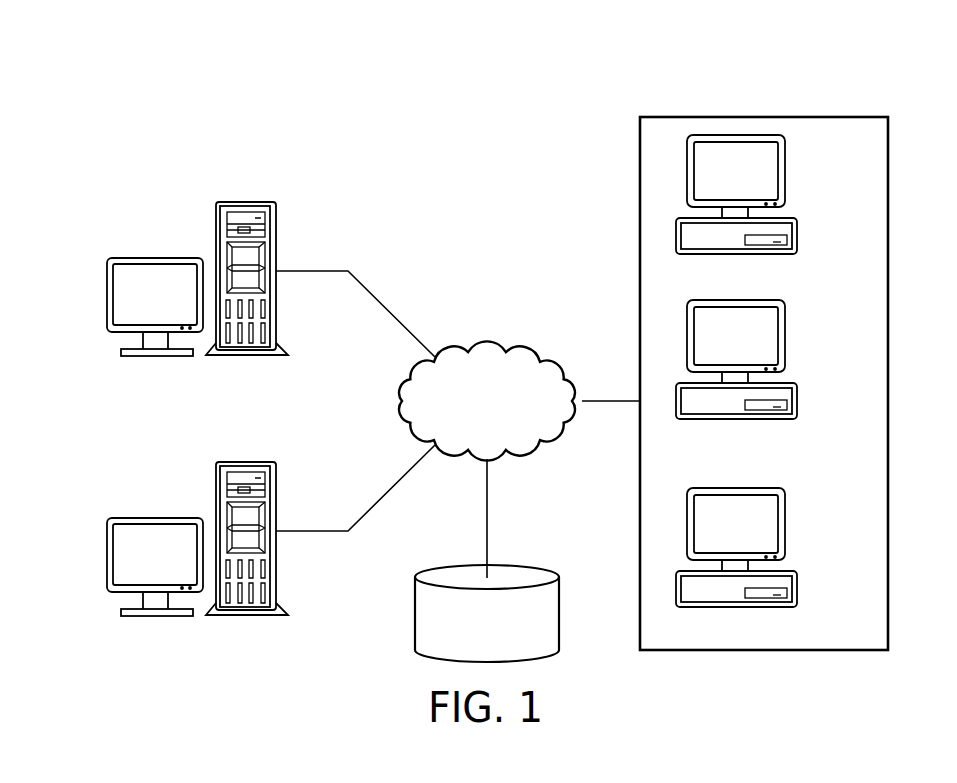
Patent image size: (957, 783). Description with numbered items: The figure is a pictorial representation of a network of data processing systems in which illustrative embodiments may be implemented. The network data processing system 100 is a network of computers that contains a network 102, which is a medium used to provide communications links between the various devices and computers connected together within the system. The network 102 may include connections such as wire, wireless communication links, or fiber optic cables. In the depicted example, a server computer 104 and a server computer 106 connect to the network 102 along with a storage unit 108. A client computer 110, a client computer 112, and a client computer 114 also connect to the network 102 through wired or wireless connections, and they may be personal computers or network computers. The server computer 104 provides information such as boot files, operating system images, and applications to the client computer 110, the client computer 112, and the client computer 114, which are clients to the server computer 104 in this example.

The network data processing system 100 is at (338, 80).
The network 102 is at (462, 348).
The server computer 104 is at (107, 556).
The server computer 106 is at (107, 296).
The storage unit 108 is at (415, 612).
The client computer 110 is at (797, 228).
The client computer 112 is at (797, 408).
The client computer 114 is at (797, 597).